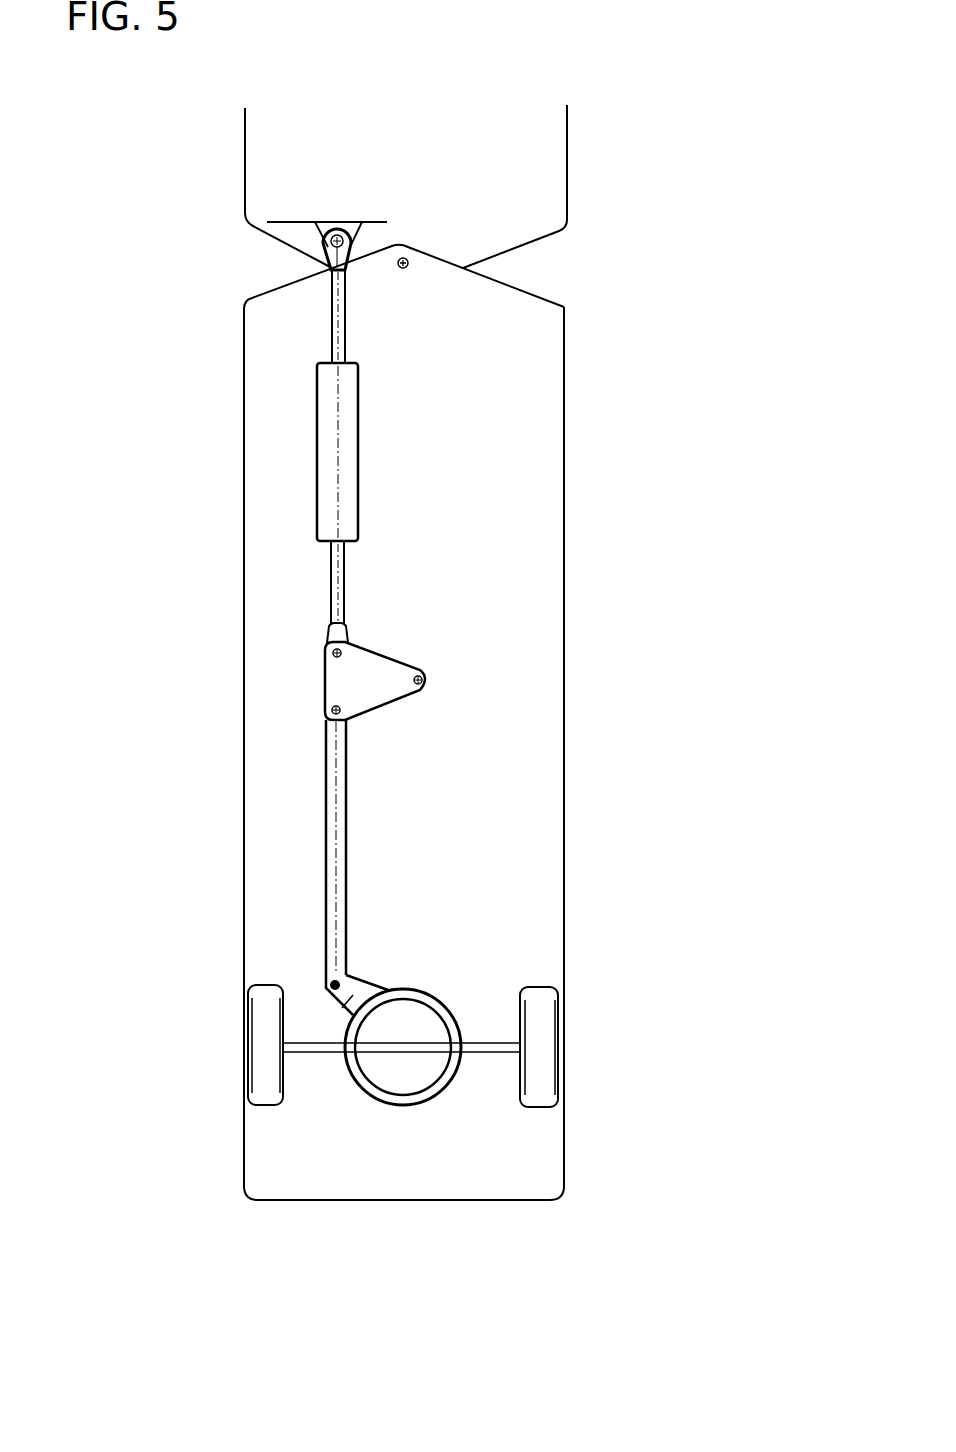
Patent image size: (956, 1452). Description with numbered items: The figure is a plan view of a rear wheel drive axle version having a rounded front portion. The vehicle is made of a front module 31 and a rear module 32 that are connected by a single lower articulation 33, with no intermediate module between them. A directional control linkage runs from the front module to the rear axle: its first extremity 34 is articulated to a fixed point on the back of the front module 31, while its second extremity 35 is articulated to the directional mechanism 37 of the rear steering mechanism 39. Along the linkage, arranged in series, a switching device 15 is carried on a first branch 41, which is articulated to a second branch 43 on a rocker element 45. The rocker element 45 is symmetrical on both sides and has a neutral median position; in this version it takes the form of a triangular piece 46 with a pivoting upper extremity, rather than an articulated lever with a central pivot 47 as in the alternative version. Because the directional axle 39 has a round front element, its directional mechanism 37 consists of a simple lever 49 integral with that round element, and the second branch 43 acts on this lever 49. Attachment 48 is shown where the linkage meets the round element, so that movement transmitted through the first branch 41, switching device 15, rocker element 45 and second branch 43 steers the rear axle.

The front module 31 is at (540, 188).
The rear module 32 is at (532, 438).
The lower articulation 33 is at (424, 283).
The first extremity 34 is at (302, 229).
The first branch 41 is at (290, 372).
The switching device 15 is at (303, 430).
The rocker element 45 is at (310, 652).
The triangular piece 46 is at (352, 680).
The second branch 43 is at (307, 813).
The second extremity 35 is at (308, 987).
The simple lever 49 is at (346, 1005).
The central pivot 47 is at (433, 1000).
The ring attachment 48 is at (417, 980).
The directional mechanism 37 is at (398, 1125).
The rear steering mechanism 39 is at (313, 1072).